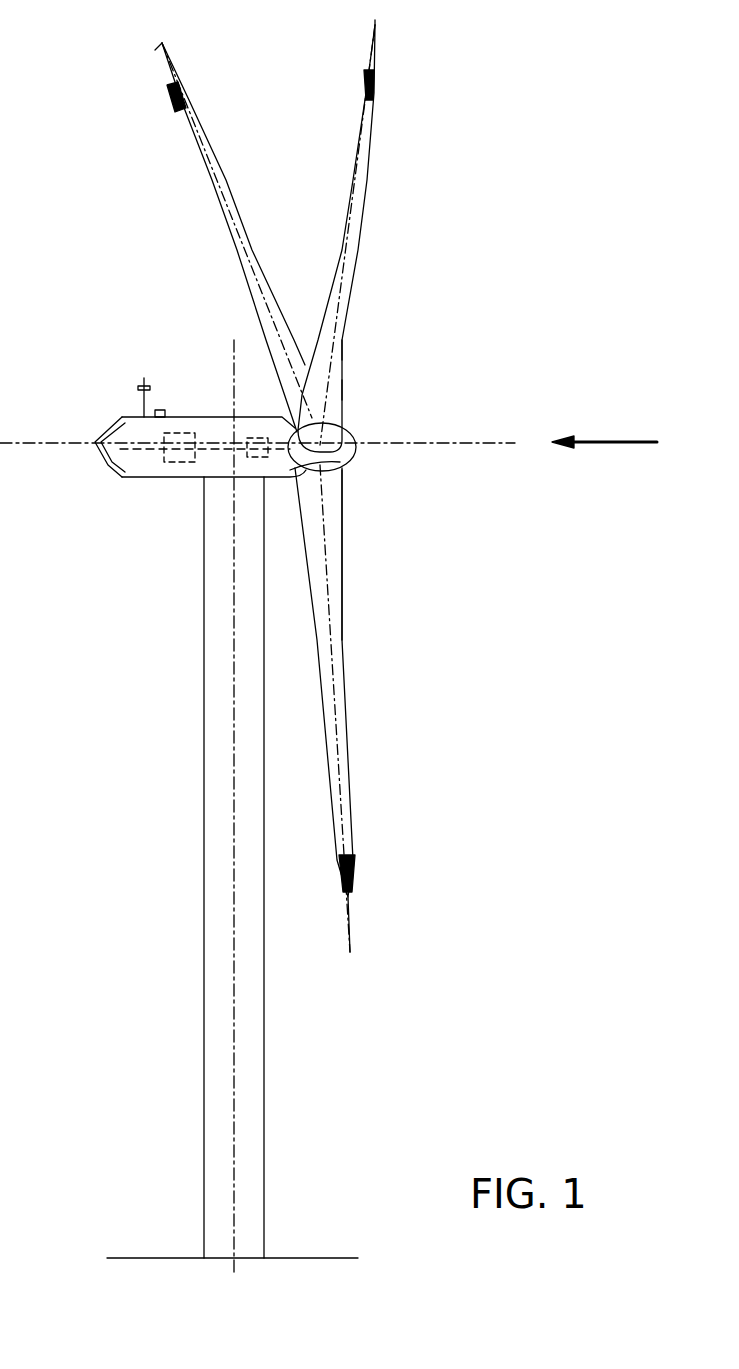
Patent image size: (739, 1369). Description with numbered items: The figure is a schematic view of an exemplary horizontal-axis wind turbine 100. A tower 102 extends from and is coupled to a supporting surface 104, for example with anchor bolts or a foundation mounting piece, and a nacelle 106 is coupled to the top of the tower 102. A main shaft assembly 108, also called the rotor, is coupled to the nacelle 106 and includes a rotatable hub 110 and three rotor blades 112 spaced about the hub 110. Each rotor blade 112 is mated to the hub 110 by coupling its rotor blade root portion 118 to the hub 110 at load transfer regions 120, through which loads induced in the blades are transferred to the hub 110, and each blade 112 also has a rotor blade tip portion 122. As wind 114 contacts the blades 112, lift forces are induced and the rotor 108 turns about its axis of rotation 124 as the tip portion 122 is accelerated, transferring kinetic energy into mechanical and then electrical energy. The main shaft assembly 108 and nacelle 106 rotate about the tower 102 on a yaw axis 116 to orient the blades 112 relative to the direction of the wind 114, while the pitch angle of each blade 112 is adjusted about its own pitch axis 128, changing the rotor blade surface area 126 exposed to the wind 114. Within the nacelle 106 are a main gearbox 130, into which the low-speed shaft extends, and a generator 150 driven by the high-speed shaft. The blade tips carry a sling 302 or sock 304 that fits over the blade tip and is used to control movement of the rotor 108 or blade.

The wind turbine 100 is at (505, 48).
The tower 102 is at (204, 1145).
The supporting surface 104 is at (131, 1258).
The nacelle 106 is at (135, 478).
The main shaft assembly 108 is at (360, 476).
The rotatable hub 110 is at (350, 430).
The rotor blades 112 is at (222, 205).
The wind 114 is at (612, 442).
The yaw axis 116 is at (234, 372).
The rotor blade root portion 118 is at (342, 560).
The load transfer regions 120 is at (343, 400).
The rotor blade tip portion 122 is at (192, 135).
The axis of rotation 124 is at (470, 445).
The rotor blade surface area 126 is at (343, 360).
The pitch axis 128 is at (160, 45).
The main gearbox 130 is at (255, 458).
The generator 150 is at (170, 462).
The sling 302 is at (355, 868).
The sock 304 is at (183, 105).